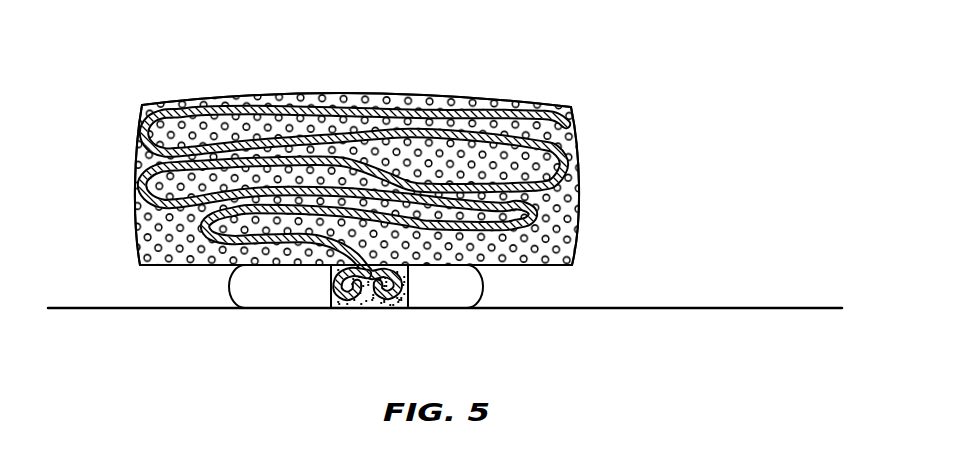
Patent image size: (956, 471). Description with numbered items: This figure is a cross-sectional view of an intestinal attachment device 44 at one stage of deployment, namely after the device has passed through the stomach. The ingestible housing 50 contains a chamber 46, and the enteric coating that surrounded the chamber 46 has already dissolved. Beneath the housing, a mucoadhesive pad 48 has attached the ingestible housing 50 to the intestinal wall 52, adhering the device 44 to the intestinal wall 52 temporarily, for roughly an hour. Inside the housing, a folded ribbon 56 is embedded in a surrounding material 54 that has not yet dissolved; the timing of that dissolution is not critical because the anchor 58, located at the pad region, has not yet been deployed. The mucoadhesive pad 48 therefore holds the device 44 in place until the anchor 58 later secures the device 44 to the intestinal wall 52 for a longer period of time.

The intestinal attachment device 44 is at (108, 49).
The chamber 46 is at (142, 161).
The mucoadhesive pad 48 is at (438, 293).
The ingestible housing 50 is at (405, 97).
The intestinal wall 52 is at (692, 311).
The material surrounding ribbon 54 is at (578, 201).
The ribbon 56 is at (344, 104).
The anchor 58 is at (361, 287).